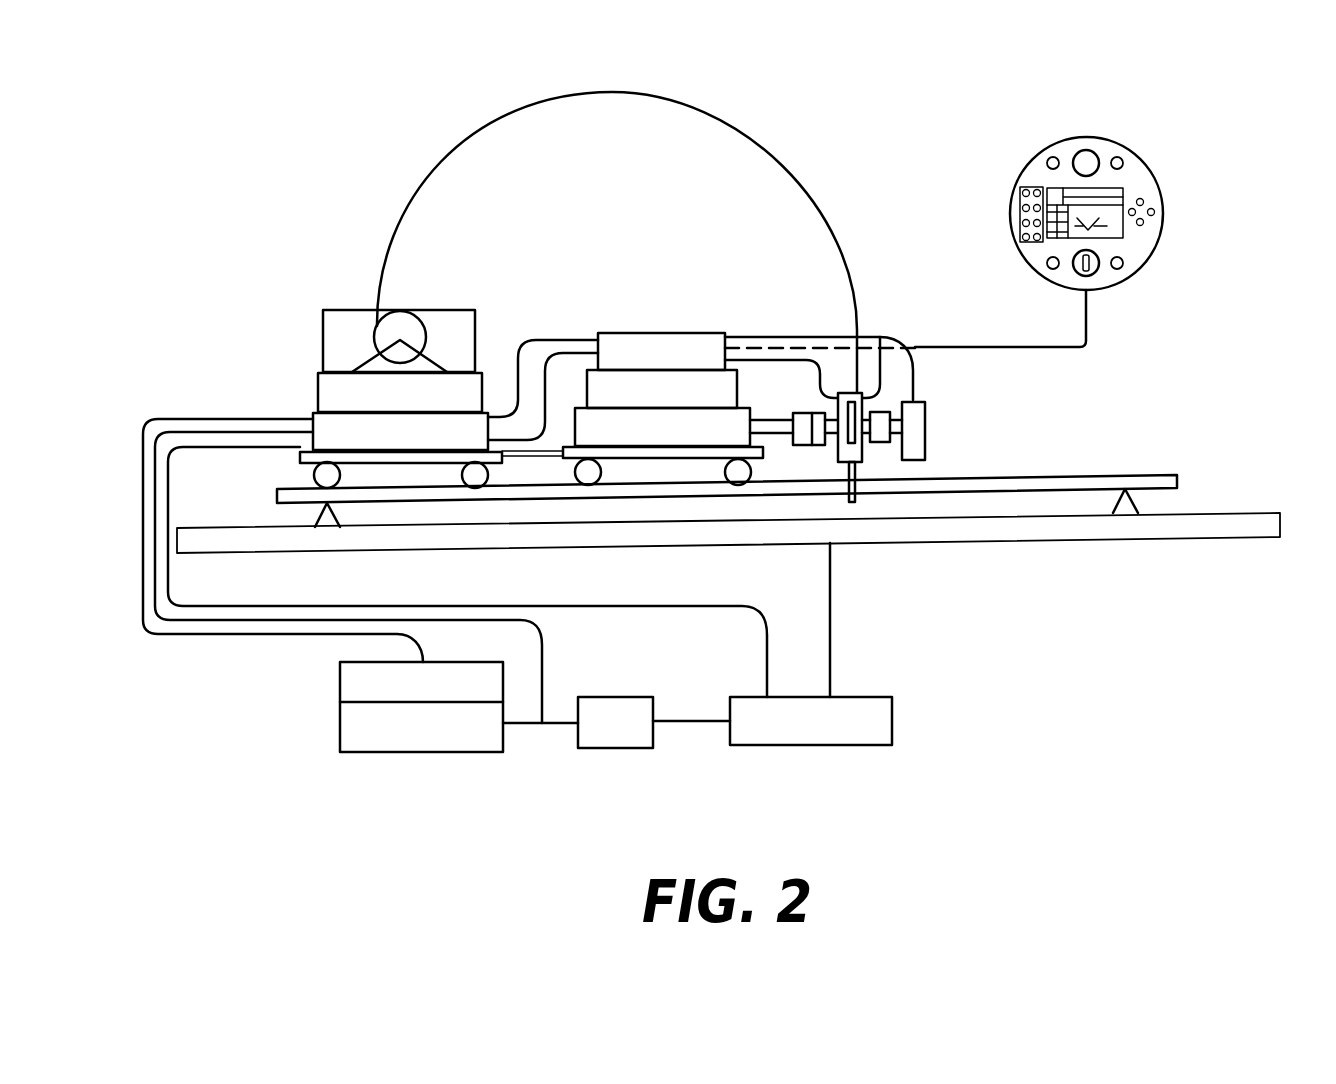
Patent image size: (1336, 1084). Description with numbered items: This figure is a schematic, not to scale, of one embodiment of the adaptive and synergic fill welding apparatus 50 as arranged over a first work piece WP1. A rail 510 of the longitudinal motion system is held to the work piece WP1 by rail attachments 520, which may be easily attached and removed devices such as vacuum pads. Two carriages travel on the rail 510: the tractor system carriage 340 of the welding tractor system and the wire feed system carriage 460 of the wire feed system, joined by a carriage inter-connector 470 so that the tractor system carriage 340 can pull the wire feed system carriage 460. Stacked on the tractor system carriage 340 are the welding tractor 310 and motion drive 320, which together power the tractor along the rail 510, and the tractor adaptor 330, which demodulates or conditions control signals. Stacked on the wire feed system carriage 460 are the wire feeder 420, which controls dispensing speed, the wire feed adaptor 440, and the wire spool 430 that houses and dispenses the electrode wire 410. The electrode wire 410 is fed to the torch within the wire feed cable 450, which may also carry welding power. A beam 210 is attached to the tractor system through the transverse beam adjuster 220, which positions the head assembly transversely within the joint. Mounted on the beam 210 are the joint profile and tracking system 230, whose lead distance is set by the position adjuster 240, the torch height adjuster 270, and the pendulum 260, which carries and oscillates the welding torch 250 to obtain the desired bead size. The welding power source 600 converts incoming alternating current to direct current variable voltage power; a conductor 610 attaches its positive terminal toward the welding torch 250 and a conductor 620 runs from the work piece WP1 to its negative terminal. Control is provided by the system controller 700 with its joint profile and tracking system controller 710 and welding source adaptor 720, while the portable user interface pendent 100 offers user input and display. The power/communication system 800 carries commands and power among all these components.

The adaptive and synergic fill welding apparatus 50 is at (258, 180).
The user interface pendent 100 is at (1040, 140).
The beam 210 is at (776, 438).
The transverse beam adjuster 220 is at (835, 412).
The joint profile and tracking system 230 is at (930, 449).
The joint profile and tracking system position adjuster 240 is at (882, 446).
The welding torch 250 is at (863, 462).
The pendulum 260 is at (825, 408).
The torch height adjuster 270 is at (863, 410).
The welding tractor 310 is at (684, 444).
The motion drive 320 is at (684, 406).
The tractor adaptor 330 is at (684, 368).
The tractor system carriage 340 is at (685, 458).
The electrode wire 410 is at (853, 505).
The wire feeder 420 is at (422, 448).
The wire spool 430 is at (323, 322).
The wire feed adaptor 440 is at (422, 408).
The wire feed cable 450 is at (573, 95).
The wire feed system carriage 460 is at (302, 460).
The carriage inter-connector 470 is at (523, 462).
The rail 510 is at (1110, 476).
The rail attachment 520 is at (306, 518).
The welding power source 600 is at (837, 736).
The conductor 610 is at (767, 660).
The conductor 620 is at (830, 660).
The system controller 700 is at (421, 707).
The joint profile and tracking system controller 710 is at (442, 699).
The welding source adaptor 720 is at (638, 738).
The power/communication system 800 is at (283, 656).
The first work piece WP1 is at (1120, 540).